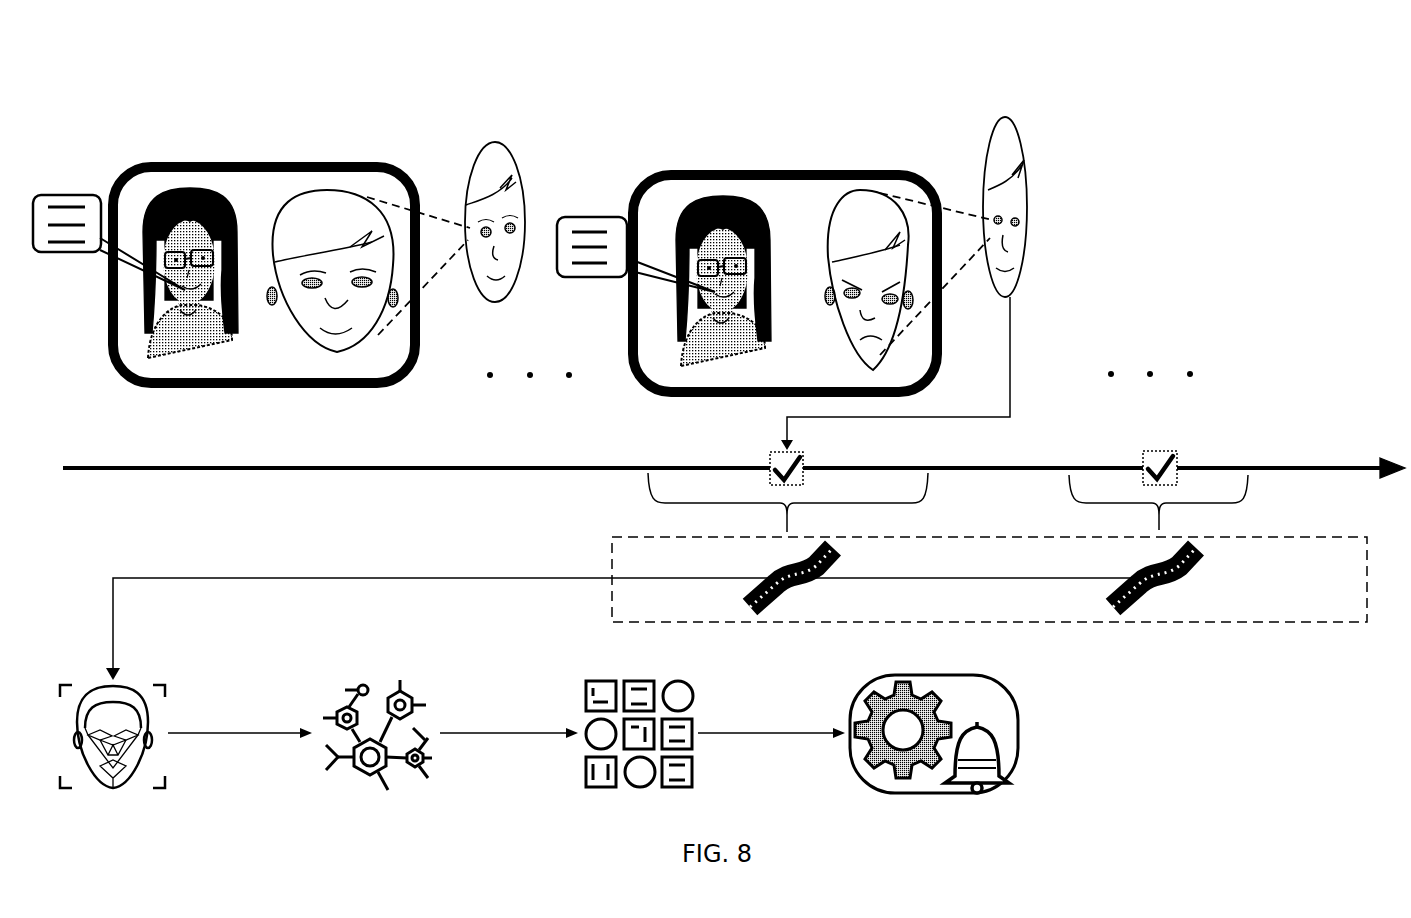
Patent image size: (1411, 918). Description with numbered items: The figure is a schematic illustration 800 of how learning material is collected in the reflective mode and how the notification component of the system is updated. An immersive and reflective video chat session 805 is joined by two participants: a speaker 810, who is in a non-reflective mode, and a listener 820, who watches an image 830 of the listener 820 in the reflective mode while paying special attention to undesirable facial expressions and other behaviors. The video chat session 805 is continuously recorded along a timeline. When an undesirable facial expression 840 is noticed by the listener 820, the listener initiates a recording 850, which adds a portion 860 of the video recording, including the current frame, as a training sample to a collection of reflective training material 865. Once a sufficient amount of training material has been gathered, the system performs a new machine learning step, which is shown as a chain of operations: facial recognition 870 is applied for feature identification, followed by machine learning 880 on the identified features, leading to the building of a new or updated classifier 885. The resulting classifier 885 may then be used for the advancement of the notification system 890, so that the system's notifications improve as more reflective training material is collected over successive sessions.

The schematic illustration 800 is at (1385, 97).
The video chat session 805 is at (248, 162).
The speaker 810 is at (172, 197).
The listener 820 is at (525, 180).
The image of the listener 830 is at (340, 190).
The undesirable facial expression 840 is at (865, 188).
The recording 850 is at (770, 465).
The portion of video recording 860 is at (787, 583).
The collection of reflective training material 865 is at (612, 547).
The facial recognition 870 is at (118, 687).
The machine learning 880 is at (360, 690).
The classifier 885 is at (583, 700).
The notification system 890 is at (850, 715).